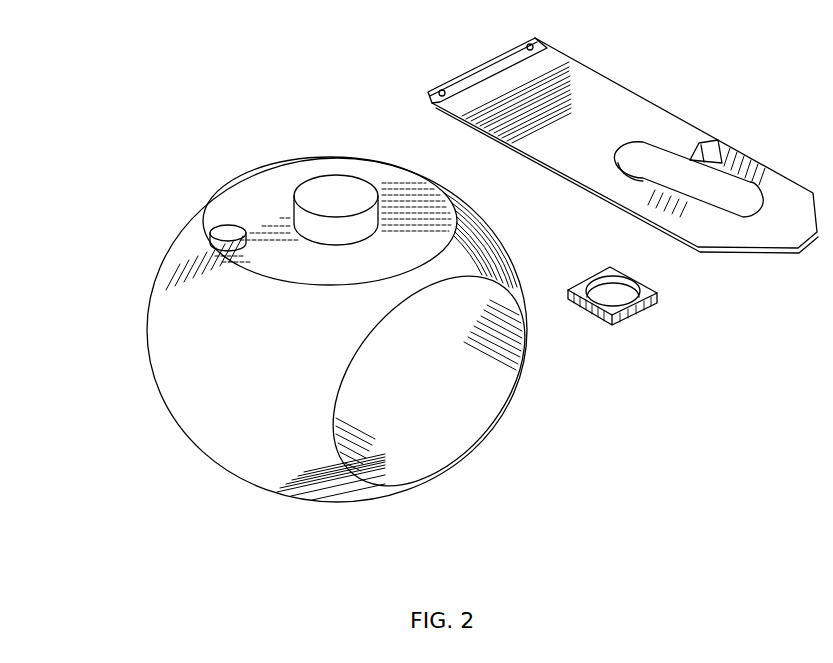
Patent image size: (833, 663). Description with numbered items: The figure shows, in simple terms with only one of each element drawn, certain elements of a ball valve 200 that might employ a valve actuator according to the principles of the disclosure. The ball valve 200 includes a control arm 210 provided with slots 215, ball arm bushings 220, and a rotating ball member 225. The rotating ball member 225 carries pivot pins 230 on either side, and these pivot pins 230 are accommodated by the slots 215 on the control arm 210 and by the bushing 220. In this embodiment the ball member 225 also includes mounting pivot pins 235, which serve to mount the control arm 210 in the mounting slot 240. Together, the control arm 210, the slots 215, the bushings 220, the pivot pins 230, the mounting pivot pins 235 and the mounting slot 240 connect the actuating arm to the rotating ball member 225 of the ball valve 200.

The ball valve 200 is at (168, 40).
The control arm 210 is at (557, 70).
The slots 215 is at (725, 160).
The ball arm bushings 220 is at (657, 297).
The rotating ball member 225 is at (163, 343).
The pivot pins 230 is at (210, 222).
The mounting pivot pins 235 is at (340, 187).
The mounting slot 240 is at (685, 163).